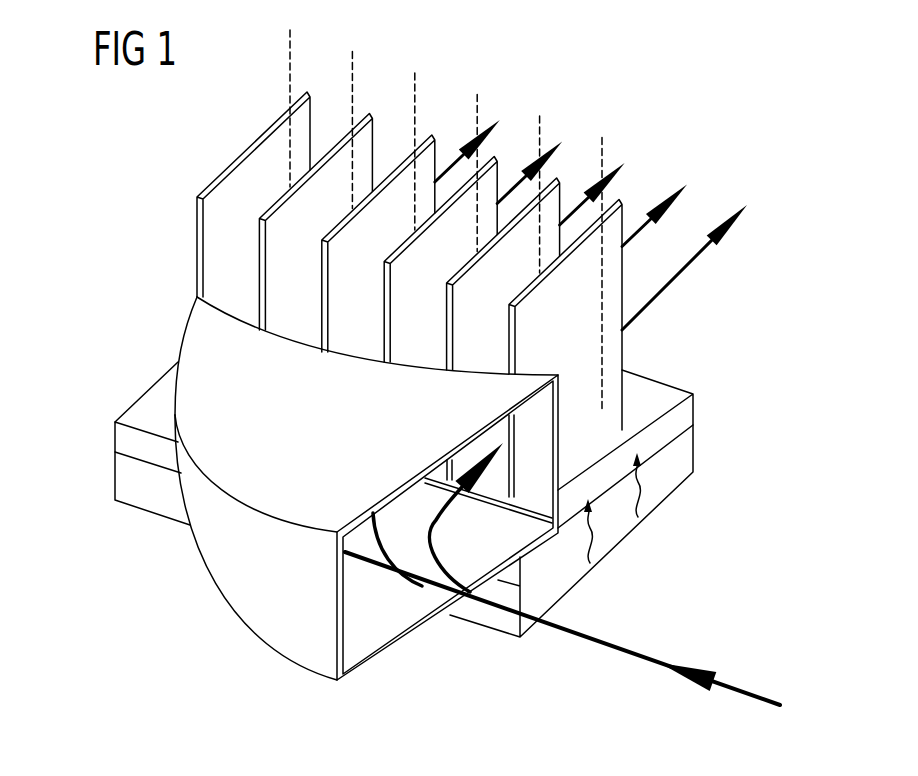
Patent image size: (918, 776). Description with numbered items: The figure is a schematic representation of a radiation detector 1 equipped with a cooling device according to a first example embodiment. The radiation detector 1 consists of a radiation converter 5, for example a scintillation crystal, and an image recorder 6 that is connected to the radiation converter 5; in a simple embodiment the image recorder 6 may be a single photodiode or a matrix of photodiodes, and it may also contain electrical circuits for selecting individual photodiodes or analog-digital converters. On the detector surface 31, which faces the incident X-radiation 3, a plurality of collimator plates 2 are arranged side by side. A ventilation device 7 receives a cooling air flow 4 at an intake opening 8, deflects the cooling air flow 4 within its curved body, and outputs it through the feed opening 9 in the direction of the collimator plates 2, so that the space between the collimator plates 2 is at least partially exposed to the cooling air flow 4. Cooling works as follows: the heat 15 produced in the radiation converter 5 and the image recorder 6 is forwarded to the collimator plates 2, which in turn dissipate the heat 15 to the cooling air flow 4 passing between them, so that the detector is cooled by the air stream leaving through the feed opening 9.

The radiation detector 1 is at (131, 554).
The collimator plates 2 is at (223, 175).
The incident X-radiation 3 is at (602, 143).
The cooling air flow 4 is at (698, 258).
The radiation converter 5 is at (687, 412).
The image recorder 6 is at (687, 450).
The ventilation device 7 is at (238, 580).
The intake opening 8 is at (378, 628).
The feed opening 9 is at (241, 320).
The heat 15 is at (596, 547).
The detector surface 31 is at (153, 398).